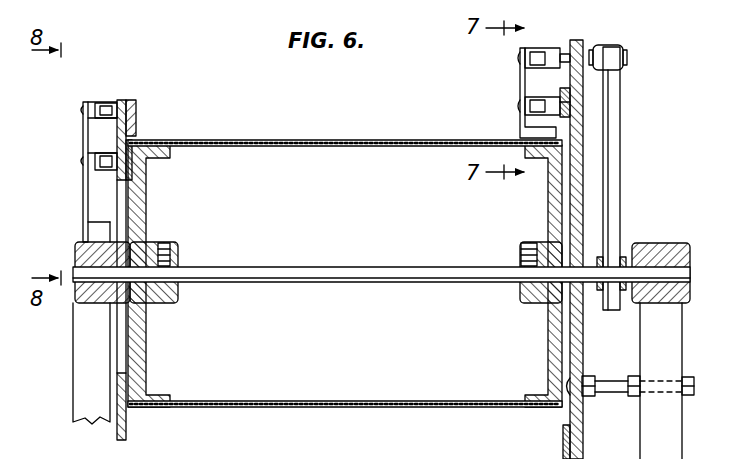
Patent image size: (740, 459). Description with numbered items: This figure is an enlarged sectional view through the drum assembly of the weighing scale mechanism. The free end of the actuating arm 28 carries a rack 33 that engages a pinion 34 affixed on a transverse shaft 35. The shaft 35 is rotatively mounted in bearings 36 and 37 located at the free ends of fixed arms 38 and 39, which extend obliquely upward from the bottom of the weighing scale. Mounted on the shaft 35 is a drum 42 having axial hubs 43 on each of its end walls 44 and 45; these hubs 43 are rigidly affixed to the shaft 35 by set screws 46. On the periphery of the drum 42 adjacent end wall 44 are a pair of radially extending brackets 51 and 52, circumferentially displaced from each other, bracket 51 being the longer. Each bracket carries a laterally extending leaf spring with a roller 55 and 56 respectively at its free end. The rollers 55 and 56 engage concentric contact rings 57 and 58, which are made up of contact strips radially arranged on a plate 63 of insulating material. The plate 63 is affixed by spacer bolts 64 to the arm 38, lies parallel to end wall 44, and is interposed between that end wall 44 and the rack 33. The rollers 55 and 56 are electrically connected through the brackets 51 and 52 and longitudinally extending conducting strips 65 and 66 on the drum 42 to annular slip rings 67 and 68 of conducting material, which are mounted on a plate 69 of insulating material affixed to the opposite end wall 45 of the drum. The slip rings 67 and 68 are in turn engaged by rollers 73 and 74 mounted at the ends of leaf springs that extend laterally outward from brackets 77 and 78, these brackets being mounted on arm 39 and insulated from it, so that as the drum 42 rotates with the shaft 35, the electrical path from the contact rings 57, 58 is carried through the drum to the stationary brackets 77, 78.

The actuating arm 28 is at (627, 53).
The rack 33 is at (612, 148).
The pinion 34 is at (622, 257).
The transverse shaft 35 is at (390, 266).
The bearing 36 is at (665, 243).
The bearing 37 is at (76, 252).
The fixed arm 38 is at (684, 430).
The fixed arm 39 is at (78, 366).
The drum 42 is at (406, 408).
The axial hub 43 is at (178, 300).
The end wall 44 is at (549, 352).
The end wall 45 is at (147, 362).
The set screw 46 is at (166, 242).
The bracket 51 is at (521, 80).
The bracket 52 is at (522, 118).
The roller 55 is at (548, 50).
The roller 56 is at (565, 103).
The contact ring 57 is at (580, 40).
The contact ring 58 is at (565, 116).
The plate of insulating material 63 is at (583, 188).
The spacer bolt 64 is at (607, 394).
The conducting strip 65 is at (136, 118).
The conducting strip 66 is at (258, 139).
The slip ring 67 is at (124, 102).
The slip ring 68 is at (118, 152).
The plate of insulating material 69 is at (127, 426).
The roller 73 is at (110, 103).
The roller 74 is at (104, 172).
The bracket 77 is at (83, 122).
The bracket 78 is at (83, 206).